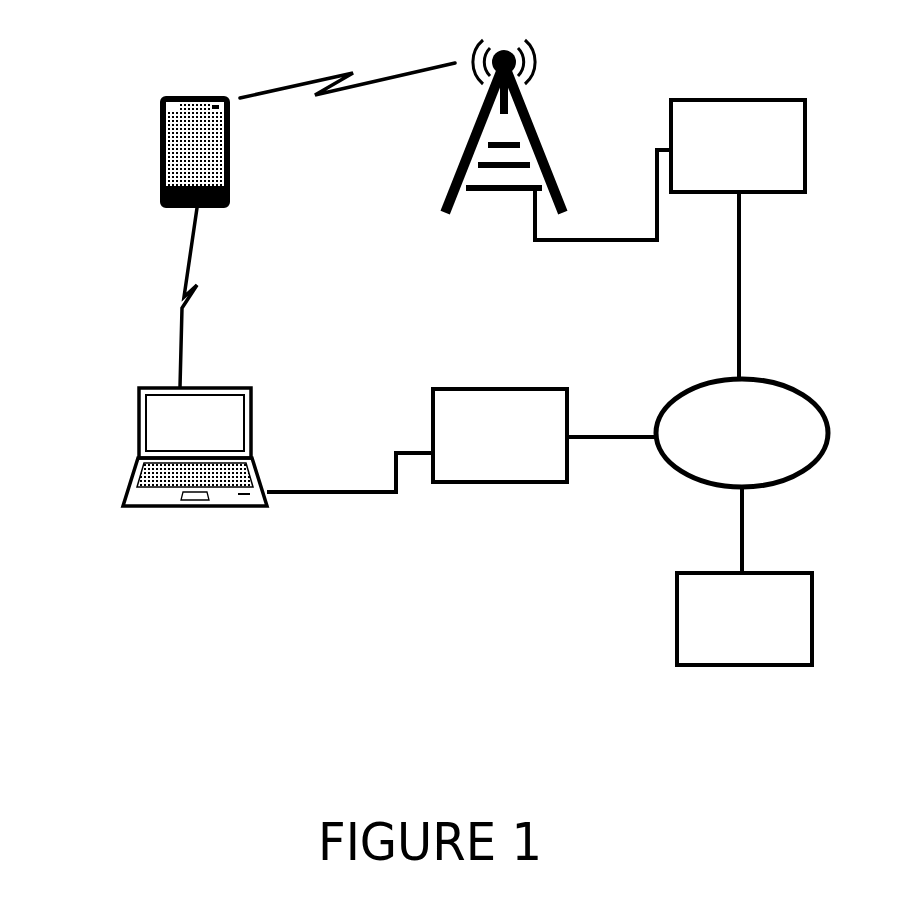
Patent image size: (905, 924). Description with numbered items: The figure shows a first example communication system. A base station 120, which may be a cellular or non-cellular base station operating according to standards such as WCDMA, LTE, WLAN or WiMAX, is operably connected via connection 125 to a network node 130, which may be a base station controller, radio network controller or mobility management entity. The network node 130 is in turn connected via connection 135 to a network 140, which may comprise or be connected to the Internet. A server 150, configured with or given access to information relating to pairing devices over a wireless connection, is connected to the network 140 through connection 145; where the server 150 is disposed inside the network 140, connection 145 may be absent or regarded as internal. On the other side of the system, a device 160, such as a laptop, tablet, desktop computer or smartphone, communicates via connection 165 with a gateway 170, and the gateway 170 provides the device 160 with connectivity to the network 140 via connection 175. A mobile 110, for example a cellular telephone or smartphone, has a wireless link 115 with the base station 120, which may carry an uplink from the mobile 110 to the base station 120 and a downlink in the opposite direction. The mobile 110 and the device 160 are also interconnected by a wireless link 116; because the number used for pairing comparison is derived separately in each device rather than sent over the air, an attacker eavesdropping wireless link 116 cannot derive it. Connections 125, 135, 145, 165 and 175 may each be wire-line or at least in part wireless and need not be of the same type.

The mobile 110 is at (160, 168).
The wireless link 115 is at (352, 72).
The wireless link 116 is at (182, 306).
The base station 120 is at (496, 197).
The connection 125 is at (607, 238).
The network node 130 is at (738, 146).
The connection 135 is at (741, 308).
The network 140 is at (742, 433).
The connection 145 is at (744, 549).
The server 150 is at (744, 619).
The device 160 is at (130, 483).
The connection 165 is at (362, 490).
The gateway 170 is at (500, 435).
The connection 175 is at (621, 439).